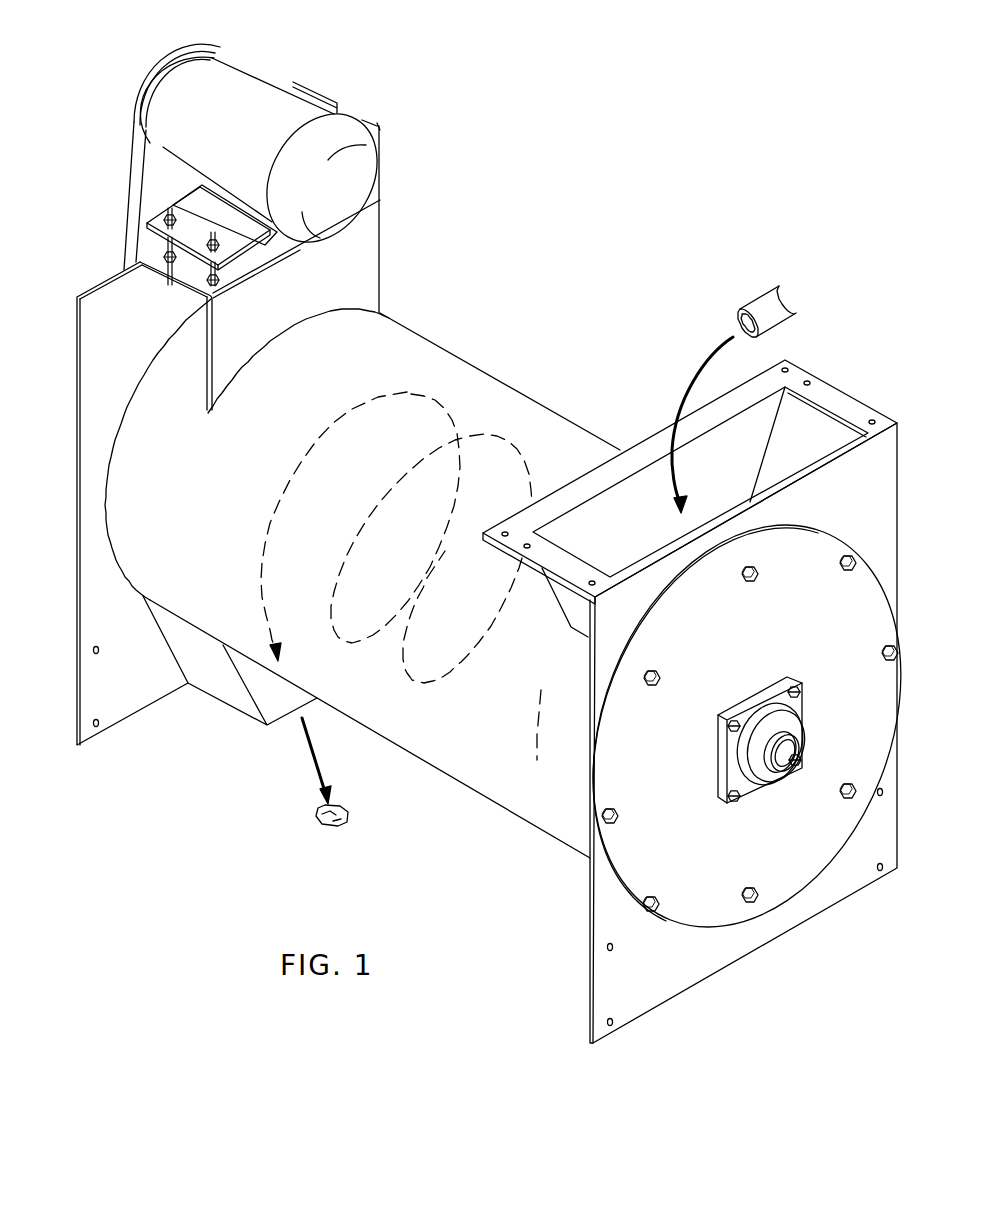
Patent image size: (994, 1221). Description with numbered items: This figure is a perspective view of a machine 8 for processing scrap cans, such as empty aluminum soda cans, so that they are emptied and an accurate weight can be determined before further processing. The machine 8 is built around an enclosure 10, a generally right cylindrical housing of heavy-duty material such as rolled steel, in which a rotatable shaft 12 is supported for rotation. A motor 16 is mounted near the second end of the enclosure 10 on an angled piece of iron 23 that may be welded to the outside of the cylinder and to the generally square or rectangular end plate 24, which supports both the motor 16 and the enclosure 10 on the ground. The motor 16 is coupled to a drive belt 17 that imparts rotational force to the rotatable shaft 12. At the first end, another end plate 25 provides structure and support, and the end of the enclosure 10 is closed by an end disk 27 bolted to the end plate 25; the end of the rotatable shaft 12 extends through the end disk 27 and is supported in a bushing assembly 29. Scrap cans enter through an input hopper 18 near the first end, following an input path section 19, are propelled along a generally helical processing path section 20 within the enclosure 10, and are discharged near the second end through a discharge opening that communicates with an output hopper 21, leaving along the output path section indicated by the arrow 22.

The machine 8 is at (603, 288).
The enclosure 10 is at (470, 363).
The rotatable shaft 12 is at (785, 763).
The motor 16 is at (259, 78).
The drive belt 17 is at (131, 170).
The input hopper 18 is at (815, 397).
The input path section 19 is at (699, 366).
The helical processing path section 20 is at (539, 748).
The output hopper 21 is at (210, 686).
The output path section 22 is at (306, 741).
The angled piece of iron 23 is at (386, 262).
The end plate 24 is at (114, 721).
The end plate 25 is at (797, 917).
The end disk 27 is at (815, 547).
The bushing assembly 29 is at (743, 704).